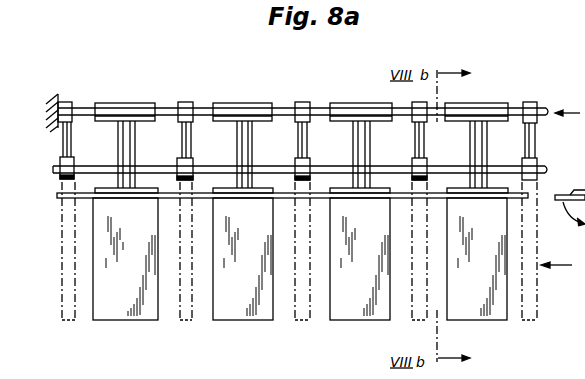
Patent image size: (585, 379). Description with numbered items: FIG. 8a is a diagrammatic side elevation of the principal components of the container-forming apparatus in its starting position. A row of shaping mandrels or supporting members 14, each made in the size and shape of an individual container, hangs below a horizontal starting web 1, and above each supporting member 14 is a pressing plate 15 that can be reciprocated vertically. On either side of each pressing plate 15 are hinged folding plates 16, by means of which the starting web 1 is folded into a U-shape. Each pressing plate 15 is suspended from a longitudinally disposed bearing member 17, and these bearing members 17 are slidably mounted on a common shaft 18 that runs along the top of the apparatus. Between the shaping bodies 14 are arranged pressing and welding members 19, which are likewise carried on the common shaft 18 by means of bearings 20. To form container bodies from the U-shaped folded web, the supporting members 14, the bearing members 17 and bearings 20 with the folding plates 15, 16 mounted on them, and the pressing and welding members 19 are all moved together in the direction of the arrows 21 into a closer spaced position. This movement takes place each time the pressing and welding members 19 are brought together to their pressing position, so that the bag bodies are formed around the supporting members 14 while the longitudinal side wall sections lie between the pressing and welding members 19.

The starting web 1 is at (208, 199).
The supporting member 14 is at (242, 313).
The pressing plate 15 is at (112, 193).
The folding plate 16 is at (584, 316).
The bearing member 17 is at (123, 109).
The common shaft 18 is at (280, 107).
The pressing and welding member 19 is at (187, 163).
The bearing 20 is at (532, 108).
The arrow 21 is at (575, 120).